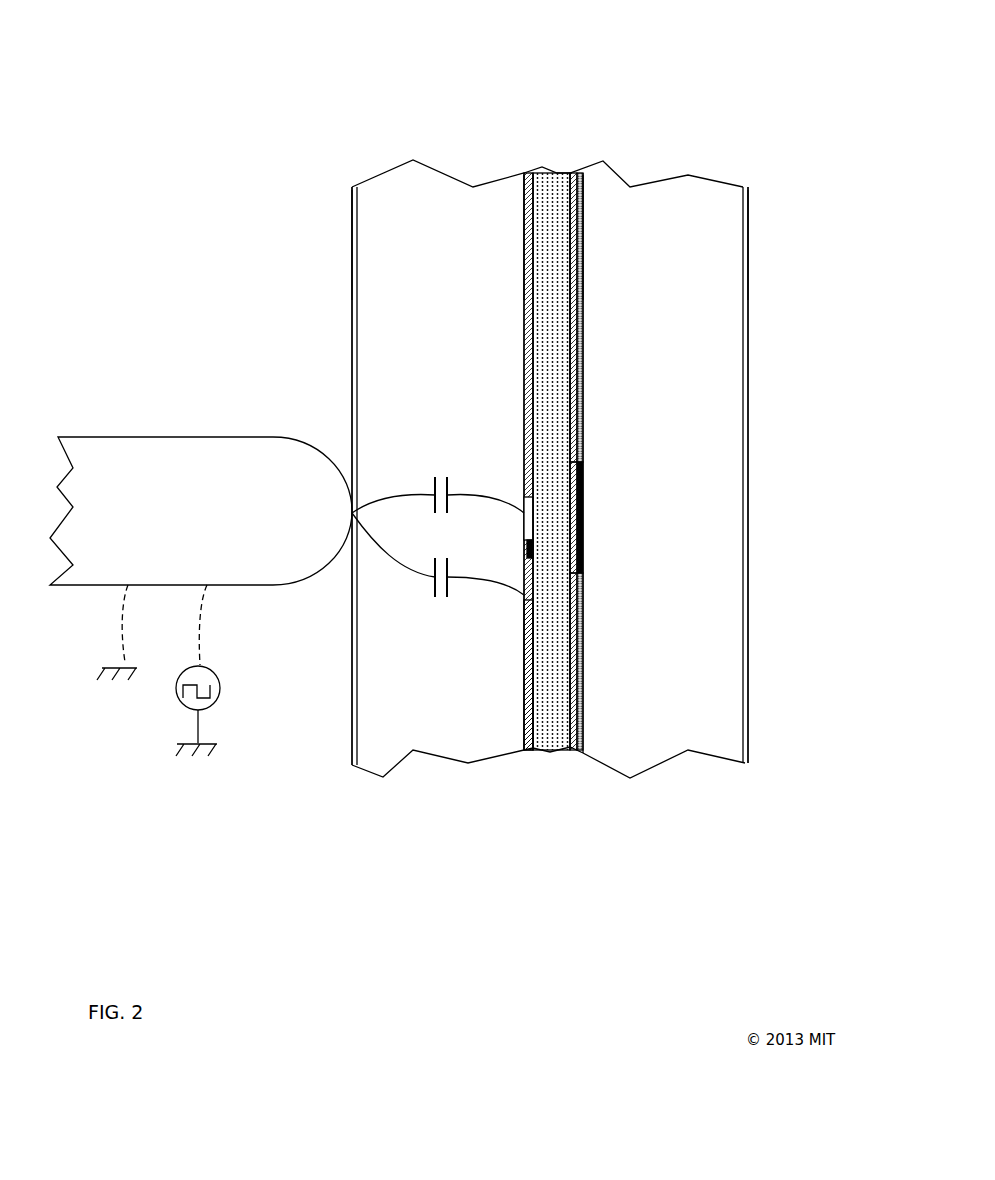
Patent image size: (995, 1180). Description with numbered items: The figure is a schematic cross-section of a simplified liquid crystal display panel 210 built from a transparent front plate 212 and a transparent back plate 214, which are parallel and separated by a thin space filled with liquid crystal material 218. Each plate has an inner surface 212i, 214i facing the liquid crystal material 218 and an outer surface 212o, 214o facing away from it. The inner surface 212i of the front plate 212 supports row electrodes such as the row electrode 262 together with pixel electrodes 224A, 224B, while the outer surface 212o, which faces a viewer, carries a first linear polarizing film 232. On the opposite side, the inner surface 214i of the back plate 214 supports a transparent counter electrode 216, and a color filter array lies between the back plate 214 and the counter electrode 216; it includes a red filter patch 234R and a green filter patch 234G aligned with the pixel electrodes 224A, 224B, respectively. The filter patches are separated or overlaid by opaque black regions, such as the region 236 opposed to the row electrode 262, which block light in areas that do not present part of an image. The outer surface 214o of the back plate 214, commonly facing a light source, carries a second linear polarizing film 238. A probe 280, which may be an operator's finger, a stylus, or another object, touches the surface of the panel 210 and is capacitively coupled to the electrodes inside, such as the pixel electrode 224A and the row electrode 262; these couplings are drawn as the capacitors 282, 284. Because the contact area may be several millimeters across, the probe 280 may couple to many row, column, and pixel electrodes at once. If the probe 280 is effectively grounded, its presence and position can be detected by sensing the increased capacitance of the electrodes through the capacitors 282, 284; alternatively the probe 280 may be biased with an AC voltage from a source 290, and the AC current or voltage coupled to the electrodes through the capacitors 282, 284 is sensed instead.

The liquid crystal display panel 210 is at (743, 82).
The front plate 212 is at (450, 763).
The inner surface of front plate 212i is at (514, 205).
The outer surface of front plate 212o is at (343, 230).
The back plate 214 is at (660, 767).
The inner surface of back plate 214i is at (593, 192).
The outer surface of back plate 214o is at (760, 220).
The counter electrode 216 is at (573, 753).
The liquid crystal material 218 is at (550, 750).
The pixel electrode 224A is at (524, 750).
The pixel electrode 224B is at (524, 320).
The first linear polarizing film 232 is at (350, 750).
The green filter patch 234G is at (585, 387).
The red filter patch 234R is at (585, 633).
The opaque black region 236 is at (585, 533).
The second linear polarizing film 238 is at (750, 707).
The row electrode 262 is at (524, 495).
The probe 280 is at (177, 437).
The capacitor 282 is at (435, 480).
The capacitor 284 is at (435, 580).
The source 290 is at (177, 690).